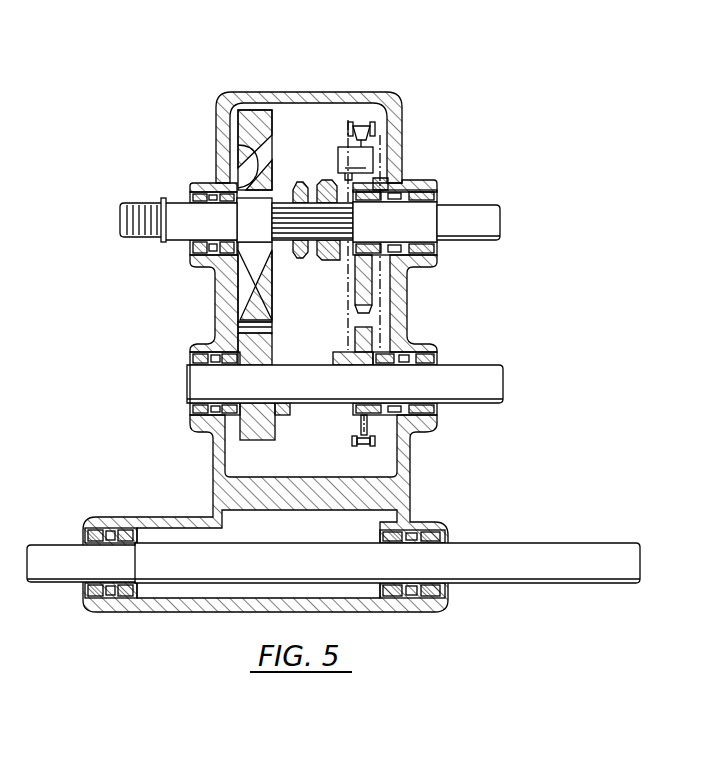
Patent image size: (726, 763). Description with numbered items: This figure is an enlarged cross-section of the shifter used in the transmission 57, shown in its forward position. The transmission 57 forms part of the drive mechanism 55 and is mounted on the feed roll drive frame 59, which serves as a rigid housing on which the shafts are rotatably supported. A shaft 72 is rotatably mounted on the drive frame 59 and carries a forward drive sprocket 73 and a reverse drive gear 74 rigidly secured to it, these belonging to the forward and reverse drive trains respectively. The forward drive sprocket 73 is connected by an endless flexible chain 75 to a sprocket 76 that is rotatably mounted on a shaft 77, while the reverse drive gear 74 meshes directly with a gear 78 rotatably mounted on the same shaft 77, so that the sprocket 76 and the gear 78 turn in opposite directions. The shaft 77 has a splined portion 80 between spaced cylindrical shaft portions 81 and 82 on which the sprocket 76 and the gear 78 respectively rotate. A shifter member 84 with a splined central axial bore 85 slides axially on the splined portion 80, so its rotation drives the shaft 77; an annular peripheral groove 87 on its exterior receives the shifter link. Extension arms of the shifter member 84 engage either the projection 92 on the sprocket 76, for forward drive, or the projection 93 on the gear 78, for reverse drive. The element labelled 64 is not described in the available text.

The drive mechanism 55 is at (468, 318).
The transmission 57 is at (350, 60).
The feed roll drive frame 59 is at (388, 97).
The drive shaft 64 is at (500, 550).
The shaft 72 is at (490, 405).
The forward drive sprocket 73 is at (365, 444).
The reverse drive gear 74 is at (262, 441).
The endless flexible chain 75 is at (378, 441).
The sprocket 76 is at (360, 297).
The shaft 77 is at (487, 202).
The gear 78 is at (262, 273).
The splined portion 80 is at (283, 200).
The cylindrical shaft portion 81 is at (389, 182).
The cylindrical shaft portion 82 is at (247, 233).
The shifter member 84 is at (332, 258).
The central axial bore 85 is at (331, 195).
The annular peripheral groove 87 is at (312, 262).
The projection 92 is at (376, 155).
The projection 93 is at (283, 287).